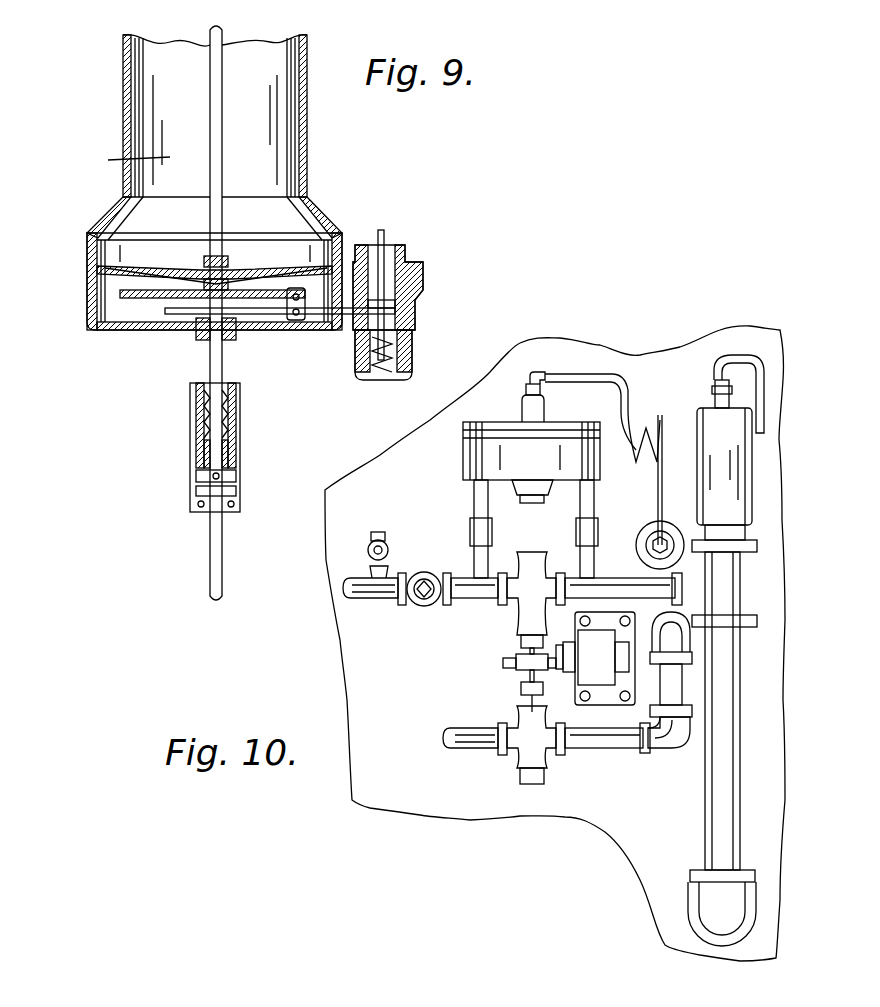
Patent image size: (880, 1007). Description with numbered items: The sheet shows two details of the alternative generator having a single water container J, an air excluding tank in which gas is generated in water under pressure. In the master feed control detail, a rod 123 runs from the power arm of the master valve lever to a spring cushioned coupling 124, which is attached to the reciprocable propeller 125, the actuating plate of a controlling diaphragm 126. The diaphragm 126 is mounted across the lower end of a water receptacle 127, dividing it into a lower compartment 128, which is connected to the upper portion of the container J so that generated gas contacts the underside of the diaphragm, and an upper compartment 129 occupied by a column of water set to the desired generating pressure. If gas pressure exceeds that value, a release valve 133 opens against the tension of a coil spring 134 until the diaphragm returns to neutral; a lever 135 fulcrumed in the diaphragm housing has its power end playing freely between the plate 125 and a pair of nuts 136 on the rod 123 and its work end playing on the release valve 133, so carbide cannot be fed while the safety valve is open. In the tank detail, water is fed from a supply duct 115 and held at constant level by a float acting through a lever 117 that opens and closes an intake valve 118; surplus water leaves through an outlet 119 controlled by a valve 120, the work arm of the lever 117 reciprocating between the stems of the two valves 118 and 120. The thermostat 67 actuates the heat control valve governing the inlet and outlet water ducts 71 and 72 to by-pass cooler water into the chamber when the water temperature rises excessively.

In FIG. 9, the rod 123 is at (222, 560).
In FIG. 9, the spring cushioned coupling 124 is at (190, 462).
In FIG. 9, the reciprocable propeller 125 is at (153, 296).
In FIG. 9, the controlling diaphragm 126 is at (146, 268).
In FIG. 9, the water receptacle 127 is at (300, 170).
In FIG. 9, the lower compartment 128 is at (130, 312).
In FIG. 9, the upper compartment 129 is at (114, 164).
In FIG. 9, the release valve 133 is at (425, 300).
In FIG. 9, the coil spring 134 is at (412, 350).
In FIG. 9, the lever 135 is at (352, 314).
In FIG. 9, the pair of nuts 136 is at (203, 335).
In FIG. 10, the water container J is at (612, 352).
In FIG. 10, the inlet water supply duct 71 is at (472, 502).
In FIG. 10, the outlet water supply duct 72 is at (596, 505).
In FIG. 10, the thermostat 67 is at (642, 536).
In FIG. 10, the supply duct 115 is at (380, 600).
In FIG. 10, the intake valve 118 is at (530, 602).
In FIG. 10, the lever 117 is at (520, 676).
In FIG. 10, the outlet 119 is at (478, 752).
In FIG. 10, the valve 120 is at (540, 752).